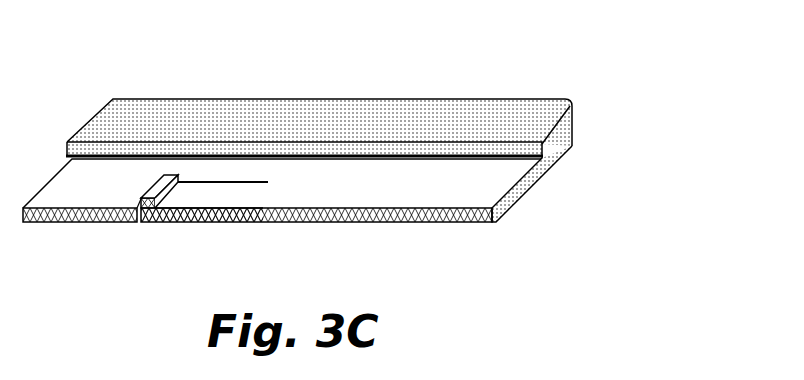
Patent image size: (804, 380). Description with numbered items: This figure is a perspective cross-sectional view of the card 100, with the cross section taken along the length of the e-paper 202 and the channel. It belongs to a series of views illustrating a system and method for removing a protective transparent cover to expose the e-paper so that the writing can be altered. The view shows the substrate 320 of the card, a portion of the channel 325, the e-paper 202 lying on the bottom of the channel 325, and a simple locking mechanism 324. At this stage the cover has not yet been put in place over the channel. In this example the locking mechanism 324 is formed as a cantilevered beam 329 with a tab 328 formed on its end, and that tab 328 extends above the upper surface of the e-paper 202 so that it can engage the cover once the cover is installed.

The card 100 is at (93, 71).
The substrate 320 is at (558, 137).
The channel 325 is at (519, 167).
The e-paper 202 is at (488, 200).
The locking mechanism 324 is at (263, 229).
The tab 328 is at (165, 175).
The cantilevered beam 329 is at (212, 200).